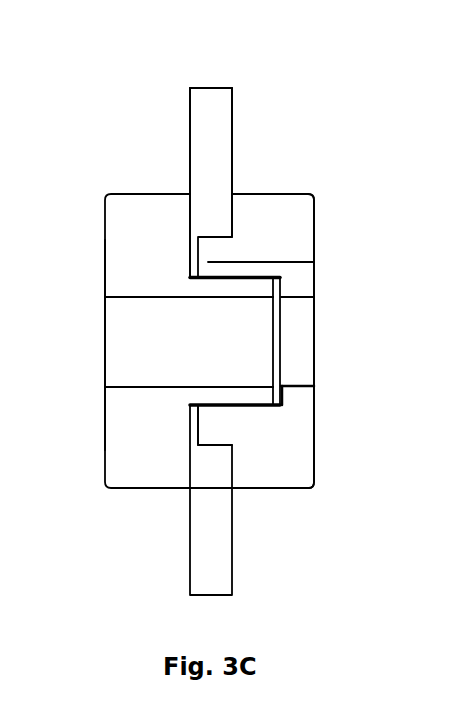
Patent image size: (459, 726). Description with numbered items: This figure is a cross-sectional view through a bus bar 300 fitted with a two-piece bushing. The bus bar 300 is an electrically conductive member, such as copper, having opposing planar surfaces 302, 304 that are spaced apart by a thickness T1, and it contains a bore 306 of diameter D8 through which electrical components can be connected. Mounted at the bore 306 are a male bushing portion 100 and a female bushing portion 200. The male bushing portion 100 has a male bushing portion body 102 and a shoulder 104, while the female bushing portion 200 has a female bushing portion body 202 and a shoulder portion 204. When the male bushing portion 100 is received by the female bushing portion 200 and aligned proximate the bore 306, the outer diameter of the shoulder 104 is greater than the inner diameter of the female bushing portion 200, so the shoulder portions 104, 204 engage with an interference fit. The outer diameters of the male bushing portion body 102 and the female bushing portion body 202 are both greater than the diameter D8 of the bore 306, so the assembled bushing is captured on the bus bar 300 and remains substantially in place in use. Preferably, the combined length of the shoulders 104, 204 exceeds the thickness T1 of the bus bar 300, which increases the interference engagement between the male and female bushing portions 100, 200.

The male bushing portion 100 is at (130, 505).
The male bushing portion body 102 is at (140, 220).
The shoulder 104 is at (249, 292).
The female bushing portion 200 is at (289, 506).
The female bushing portion body 202 is at (277, 218).
The shoulder portion 204 is at (314, 262).
The bus bar 300 is at (203, 122).
The planar surface 302 is at (192, 147).
The planar surface 304 is at (235, 115).
The bore 306 is at (212, 449).
The thickness T1 is at (227, 72).
The diameter D8 is at (103, 450).